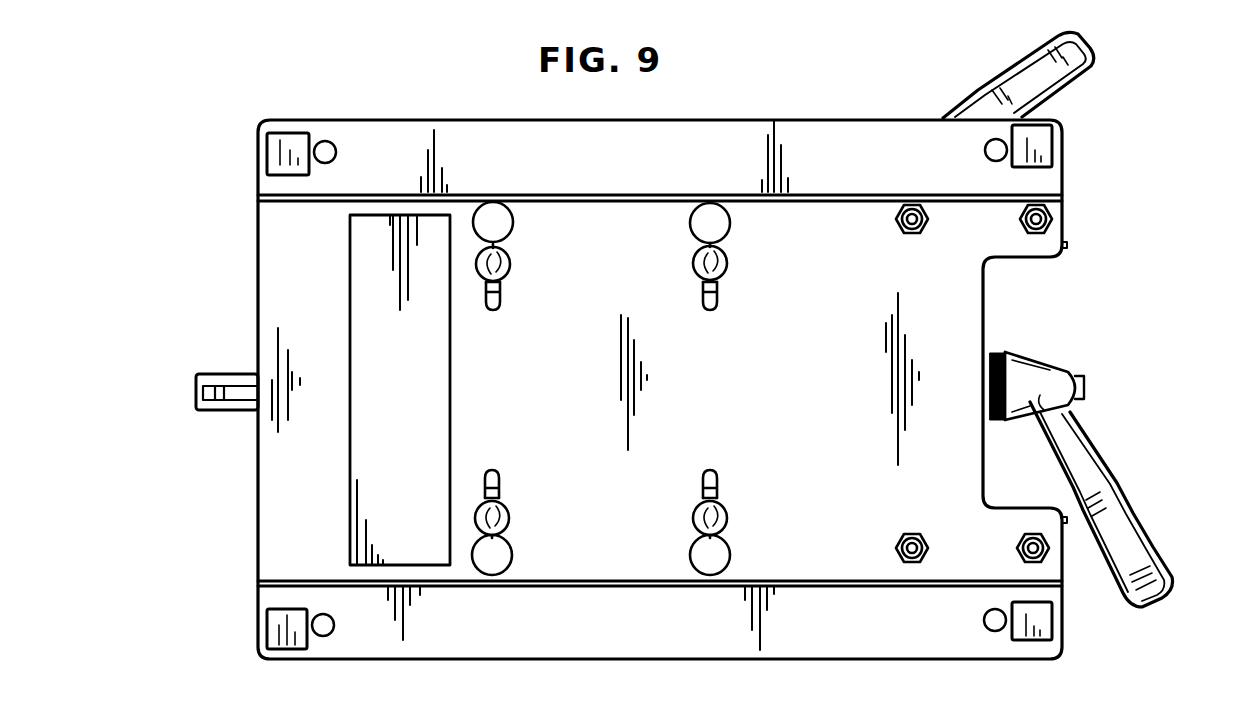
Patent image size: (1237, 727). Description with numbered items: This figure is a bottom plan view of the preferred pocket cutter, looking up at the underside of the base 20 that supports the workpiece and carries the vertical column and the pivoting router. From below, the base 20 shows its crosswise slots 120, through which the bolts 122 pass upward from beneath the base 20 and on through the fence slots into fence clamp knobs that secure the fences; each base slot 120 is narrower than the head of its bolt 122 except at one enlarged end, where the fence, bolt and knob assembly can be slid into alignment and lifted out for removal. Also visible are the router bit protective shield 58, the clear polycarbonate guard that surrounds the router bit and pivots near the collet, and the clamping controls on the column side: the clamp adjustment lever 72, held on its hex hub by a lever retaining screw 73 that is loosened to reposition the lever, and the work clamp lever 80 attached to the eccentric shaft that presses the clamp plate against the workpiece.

The base 20 is at (820, 393).
The router bit protective shield 58 is at (196, 393).
The clamp adjustment lever 72 is at (1160, 572).
The lever retaining screw 73 is at (1088, 385).
The work clamp lever 80 is at (1091, 66).
The crosswise slots 120 is at (503, 300).
The bolts 122 is at (506, 262).